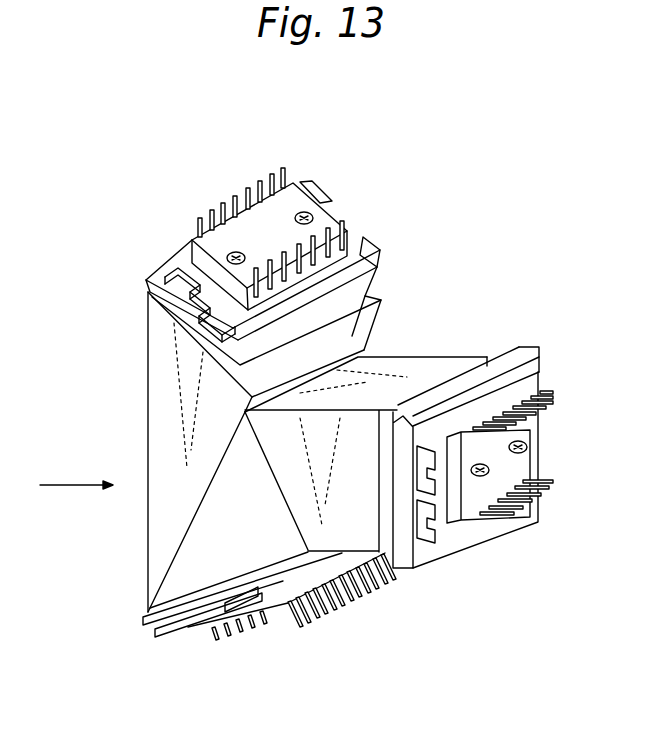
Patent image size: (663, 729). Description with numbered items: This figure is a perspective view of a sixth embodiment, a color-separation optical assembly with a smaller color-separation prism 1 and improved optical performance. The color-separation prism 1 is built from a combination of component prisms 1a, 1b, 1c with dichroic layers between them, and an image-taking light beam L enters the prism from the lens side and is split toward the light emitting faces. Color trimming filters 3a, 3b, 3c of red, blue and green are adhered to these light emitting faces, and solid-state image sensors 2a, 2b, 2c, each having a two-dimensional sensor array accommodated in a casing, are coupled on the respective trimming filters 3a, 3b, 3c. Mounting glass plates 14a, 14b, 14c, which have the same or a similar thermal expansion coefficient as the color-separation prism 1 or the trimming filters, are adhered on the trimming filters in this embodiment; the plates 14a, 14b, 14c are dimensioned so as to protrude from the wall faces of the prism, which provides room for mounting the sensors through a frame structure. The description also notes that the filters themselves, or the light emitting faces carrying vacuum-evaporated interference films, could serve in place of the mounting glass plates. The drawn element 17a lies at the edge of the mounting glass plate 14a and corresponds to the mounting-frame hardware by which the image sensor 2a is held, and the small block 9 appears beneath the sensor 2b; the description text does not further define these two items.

The color-separation prism 1 is at (287, 452).
The component prism 1a is at (157, 360).
The component prism 1b is at (188, 553).
The component prism 1c is at (416, 360).
The solid-state image sensor 2a is at (291, 197).
The solid-state image sensor 2b is at (283, 605).
The solid-state image sensor 2c is at (515, 476).
The color trimming filter 3a is at (374, 306).
The color trimming filter 3b is at (150, 607).
The color trimming filter 3c is at (487, 353).
The connector block 9 is at (246, 614).
The mounting glass plate 14a is at (381, 265).
The mounting glass plate 14b is at (178, 626).
The mounting glass plate 14c is at (438, 540).
The clip 17a is at (166, 288).
The image-taking light beam L is at (66, 485).